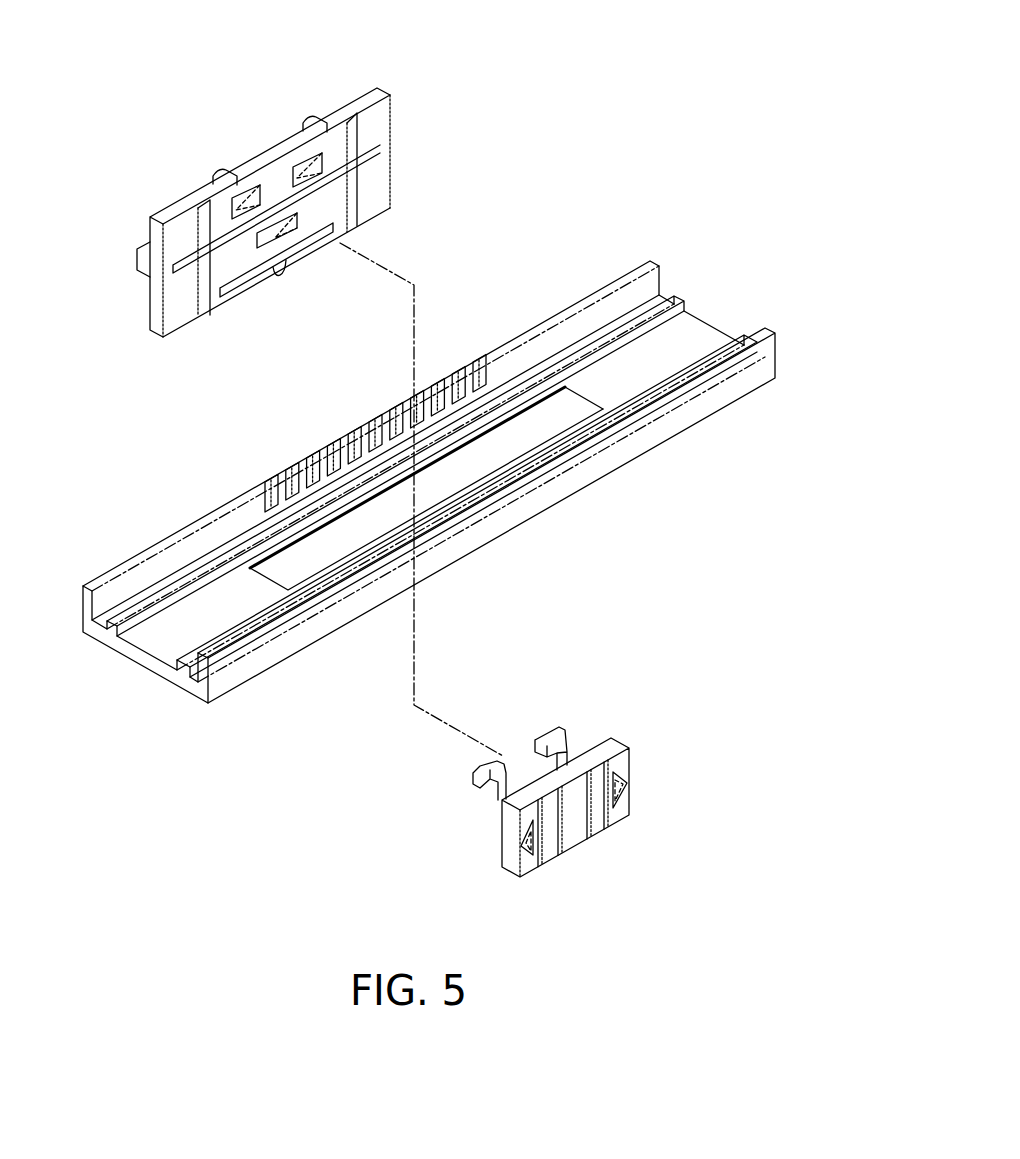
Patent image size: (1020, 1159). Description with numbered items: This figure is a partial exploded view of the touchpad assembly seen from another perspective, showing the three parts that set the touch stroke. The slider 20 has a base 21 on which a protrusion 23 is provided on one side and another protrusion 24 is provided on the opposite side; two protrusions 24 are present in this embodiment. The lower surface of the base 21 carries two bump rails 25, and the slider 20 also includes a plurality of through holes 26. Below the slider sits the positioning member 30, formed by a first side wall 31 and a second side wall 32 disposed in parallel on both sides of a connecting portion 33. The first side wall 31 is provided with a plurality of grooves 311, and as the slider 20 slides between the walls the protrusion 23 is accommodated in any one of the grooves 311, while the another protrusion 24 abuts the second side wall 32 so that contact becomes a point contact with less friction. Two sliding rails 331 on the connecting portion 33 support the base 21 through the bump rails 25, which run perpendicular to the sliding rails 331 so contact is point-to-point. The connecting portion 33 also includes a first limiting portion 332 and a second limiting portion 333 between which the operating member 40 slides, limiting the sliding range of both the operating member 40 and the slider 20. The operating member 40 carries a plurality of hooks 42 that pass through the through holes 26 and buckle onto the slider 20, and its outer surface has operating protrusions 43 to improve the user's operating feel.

The slider 20 is at (431, 82).
The base 21 is at (155, 305).
The protrusion 23 is at (279, 278).
The another protrusion 24 is at (225, 168).
The bump rail 25 is at (370, 218).
The through hole 26 is at (301, 162).
The positioning member 30 is at (742, 256).
The first side wall 31 is at (634, 268).
The groove 311 is at (386, 409).
The second side wall 32 is at (750, 370).
The connecting portion 33 is at (710, 326).
The sliding rail 331 is at (123, 606).
The first limiting portion 332 is at (276, 603).
The second limiting portion 333 is at (601, 416).
The operating member 40 is at (660, 733).
The hook 42 is at (567, 749).
The operating protrusion 43 is at (527, 872).